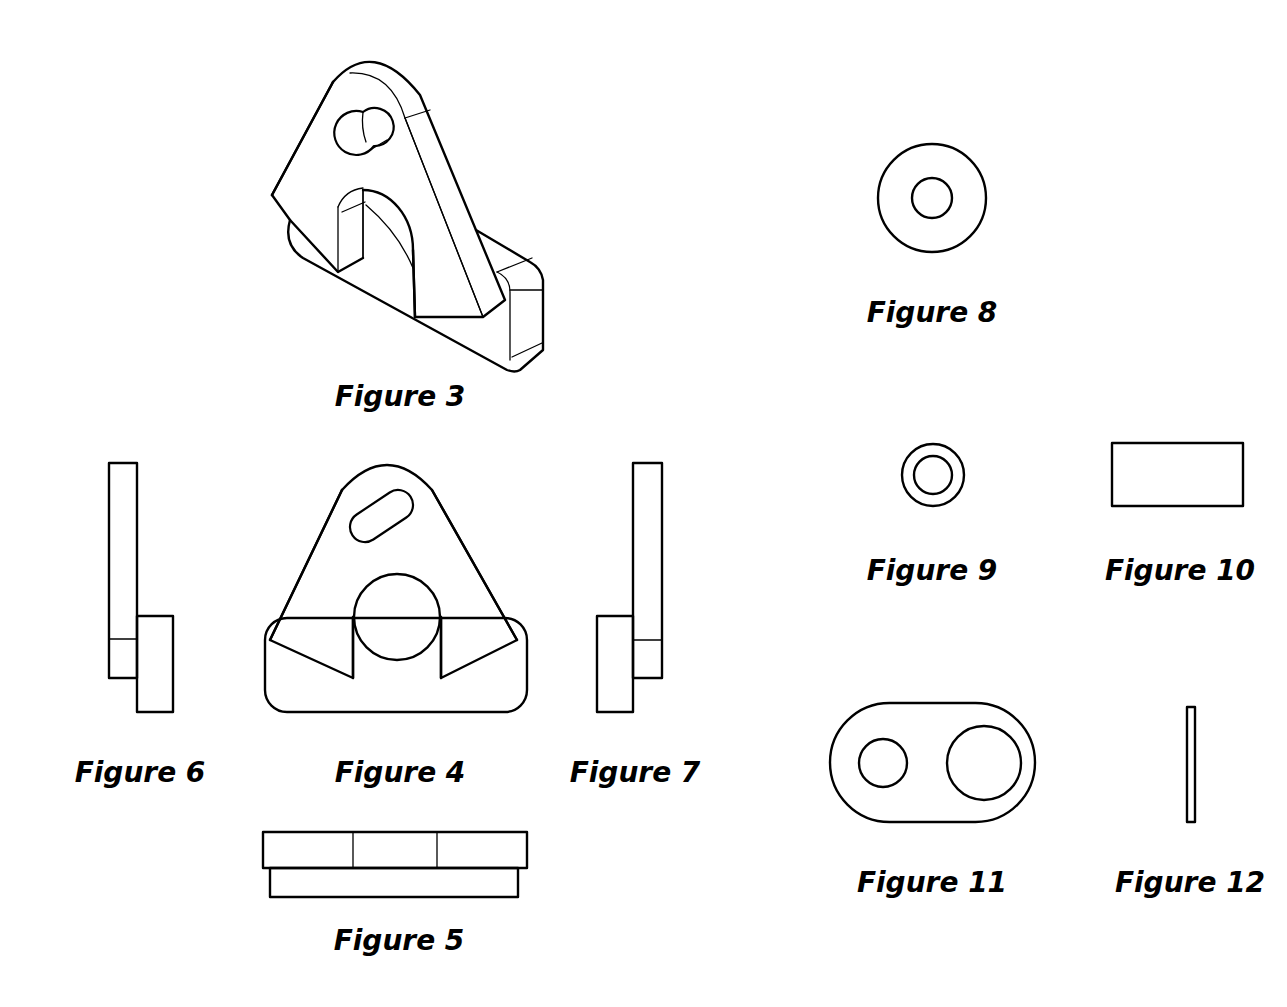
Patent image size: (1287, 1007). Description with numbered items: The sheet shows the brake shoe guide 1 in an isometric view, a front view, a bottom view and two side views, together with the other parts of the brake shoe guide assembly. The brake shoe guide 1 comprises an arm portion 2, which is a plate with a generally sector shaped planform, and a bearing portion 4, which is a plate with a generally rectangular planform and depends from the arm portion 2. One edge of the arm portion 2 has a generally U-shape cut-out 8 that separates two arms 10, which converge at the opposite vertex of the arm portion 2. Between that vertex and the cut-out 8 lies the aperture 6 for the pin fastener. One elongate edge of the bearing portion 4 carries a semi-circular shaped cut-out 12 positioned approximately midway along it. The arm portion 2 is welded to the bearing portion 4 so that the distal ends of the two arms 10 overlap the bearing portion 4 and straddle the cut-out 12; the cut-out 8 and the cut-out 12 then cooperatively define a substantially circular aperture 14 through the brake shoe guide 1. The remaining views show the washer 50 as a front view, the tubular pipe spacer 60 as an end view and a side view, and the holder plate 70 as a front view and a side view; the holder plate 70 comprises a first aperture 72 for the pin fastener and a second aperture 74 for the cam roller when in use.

In FIG. 3, the brake shoe guide 1 is at (300, 83).
In FIG. 4, the brake shoe guide 1 is at (482, 483).
In FIG. 5, the brake shoe guide 1 is at (550, 860).
In FIG. 6, the brake shoe guide 1 is at (97, 458).
In FIG. 7, the brake shoe guide 1 is at (673, 572).
In FIG. 3, the arm portion 2 is at (446, 139).
In FIG. 4, the arm portion 2 is at (463, 537).
In FIG. 5, the arm portion 2 is at (268, 880).
In FIG. 6, the arm portion 2 is at (108, 577).
In FIG. 7, the arm portion 2 is at (663, 497).
In FIG. 3, the bearing portion 4 is at (537, 258).
In FIG. 4, the bearing portion 4 is at (528, 620).
In FIG. 5, the bearing portion 4 is at (263, 850).
In FIG. 6, the bearing portion 4 is at (137, 700).
In FIG. 7, the bearing portion 4 is at (635, 703).
In FIG. 3, the aperture 6 is at (360, 139).
In FIG. 4, the aperture 6 is at (372, 518).
In FIG. 3, the U-shape cut-out 8 is at (347, 253).
In FIG. 4, the U-shape cut-out 8 is at (350, 660).
In FIG. 3, the arms 10 is at (318, 130).
In FIG. 4, the arms 10 is at (467, 585).
In FIG. 3, the semi-circular shaped cut-out 12 is at (390, 255).
In FIG. 4, the semi-circular shaped cut-out 12 is at (403, 657).
In FIG. 3, the circular aperture 14 is at (398, 237).
In FIG. 4, the circular aperture 14 is at (408, 630).
In FIG. 8, the washer 50 is at (960, 167).
In FIG. 9, the tubular pipe spacer 60 is at (948, 460).
In FIG. 10, the tubular pipe spacer 60 is at (1180, 460).
In FIG. 11, the holder plate 70 is at (932, 725).
In FIG. 12, the holder plate 70 is at (1195, 748).
In FIG. 11, the first aperture 72 is at (882, 763).
In FIG. 11, the second aperture 74 is at (985, 763).